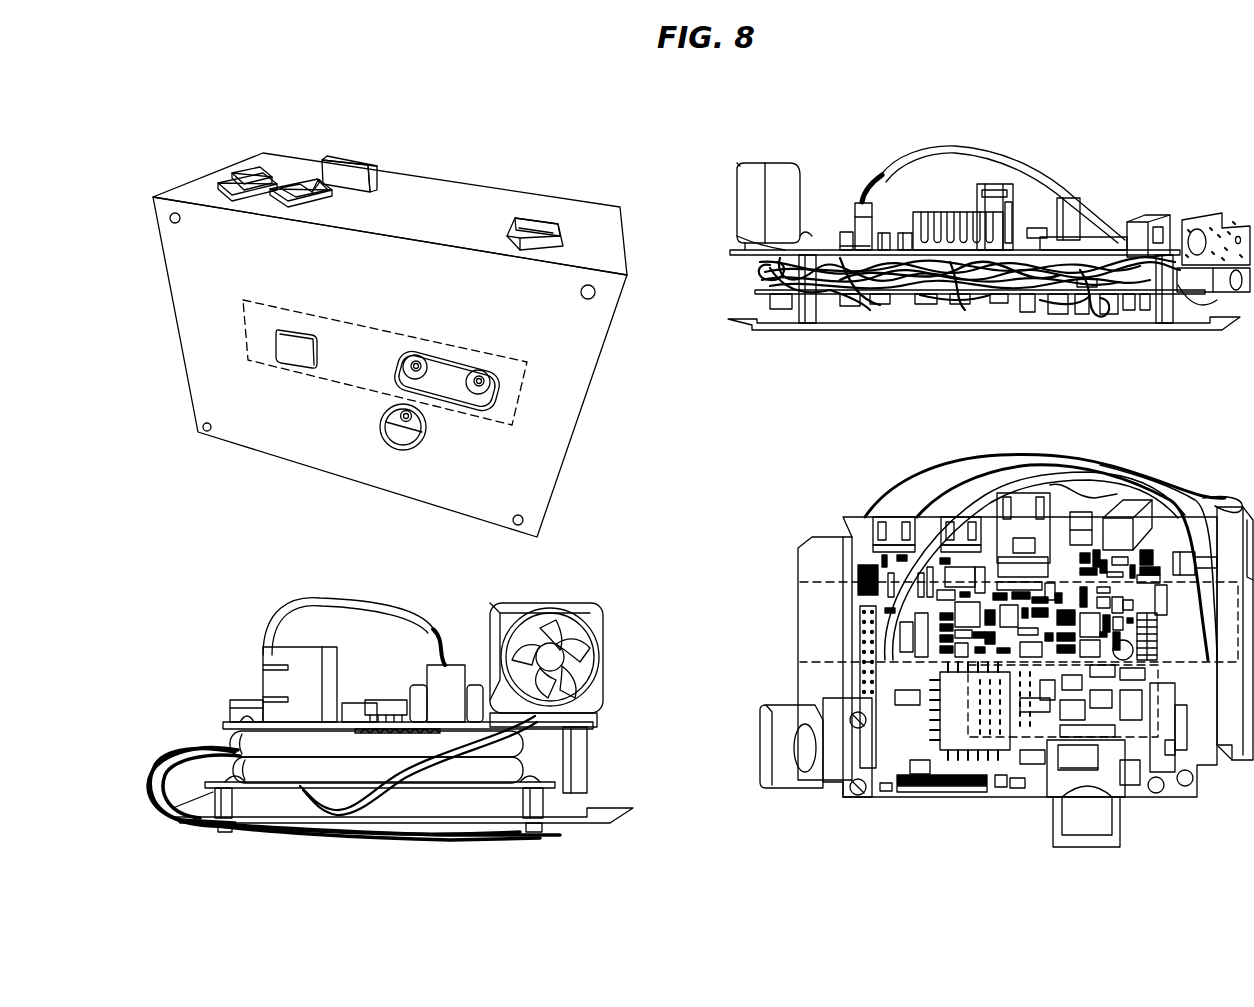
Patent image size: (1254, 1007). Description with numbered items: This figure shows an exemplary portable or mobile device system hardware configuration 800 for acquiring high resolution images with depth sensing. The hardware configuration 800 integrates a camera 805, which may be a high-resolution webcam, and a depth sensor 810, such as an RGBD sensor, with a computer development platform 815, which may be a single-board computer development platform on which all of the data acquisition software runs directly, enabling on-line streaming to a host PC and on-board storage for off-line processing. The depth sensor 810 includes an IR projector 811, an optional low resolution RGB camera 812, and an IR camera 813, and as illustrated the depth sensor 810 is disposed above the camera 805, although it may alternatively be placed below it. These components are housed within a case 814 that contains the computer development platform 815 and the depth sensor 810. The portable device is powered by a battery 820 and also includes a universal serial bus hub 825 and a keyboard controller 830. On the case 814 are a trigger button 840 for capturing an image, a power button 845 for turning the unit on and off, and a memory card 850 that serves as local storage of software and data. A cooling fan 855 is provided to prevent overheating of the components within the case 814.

The hardware configuration 800 is at (905, 72).
The camera 805 is at (398, 436).
The depth sensor 810 is at (344, 381).
The IR projector 811 is at (300, 346).
The low resolution RGB camera 812 is at (402, 358).
The IR camera 813 is at (486, 396).
The case 814 is at (560, 490).
The computer development platform 815 is at (852, 242).
The battery 820 is at (911, 274).
The USB hub 825 is at (1090, 288).
The keyboard controller 830 is at (1200, 218).
The trigger button 840 is at (540, 218).
The power button 845 is at (295, 196).
The memory card 850 is at (356, 157).
The cooling fan 855 is at (606, 630).